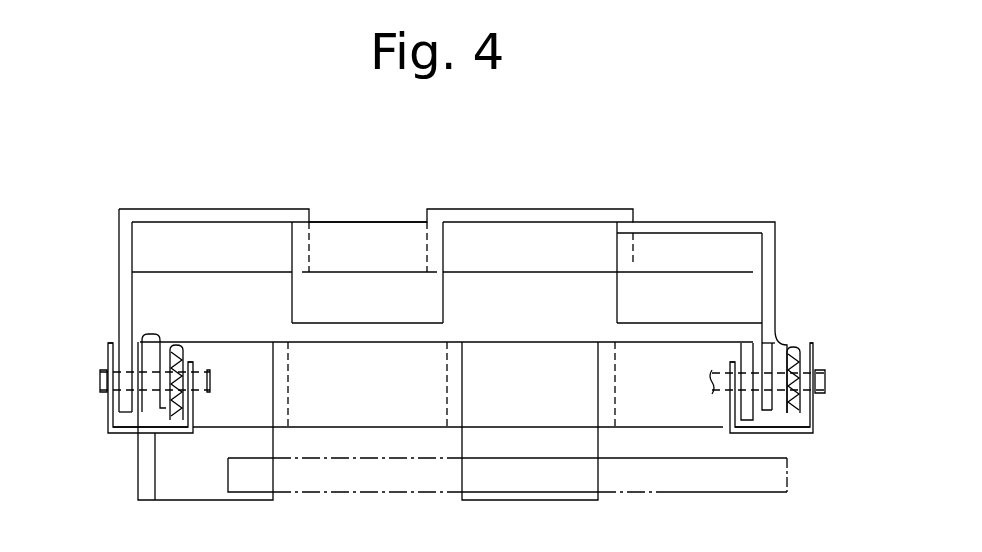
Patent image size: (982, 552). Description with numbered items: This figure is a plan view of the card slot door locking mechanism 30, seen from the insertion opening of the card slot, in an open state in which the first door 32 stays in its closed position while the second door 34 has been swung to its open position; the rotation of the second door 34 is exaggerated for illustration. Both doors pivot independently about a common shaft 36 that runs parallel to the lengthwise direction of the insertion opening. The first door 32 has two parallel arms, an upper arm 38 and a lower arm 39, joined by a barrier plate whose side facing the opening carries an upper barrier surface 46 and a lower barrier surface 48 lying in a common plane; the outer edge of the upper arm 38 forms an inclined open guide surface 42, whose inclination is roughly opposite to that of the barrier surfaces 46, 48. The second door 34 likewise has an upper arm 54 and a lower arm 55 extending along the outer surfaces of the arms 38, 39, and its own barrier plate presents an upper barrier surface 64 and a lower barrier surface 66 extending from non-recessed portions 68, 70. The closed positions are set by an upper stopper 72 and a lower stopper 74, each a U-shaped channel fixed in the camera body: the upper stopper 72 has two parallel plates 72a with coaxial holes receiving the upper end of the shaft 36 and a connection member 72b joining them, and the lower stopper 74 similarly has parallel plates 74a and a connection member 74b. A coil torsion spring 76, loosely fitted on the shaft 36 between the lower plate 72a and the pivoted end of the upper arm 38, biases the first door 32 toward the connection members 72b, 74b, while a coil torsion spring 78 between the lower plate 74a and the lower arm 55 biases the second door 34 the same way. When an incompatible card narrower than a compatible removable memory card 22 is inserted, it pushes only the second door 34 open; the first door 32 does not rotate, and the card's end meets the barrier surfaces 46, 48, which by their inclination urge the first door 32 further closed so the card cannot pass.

The card slot door locking mechanism 30 is at (121, 137).
The removable memory card 22 is at (393, 503).
The first door 32 is at (152, 500).
The second door 34 is at (555, 208).
The shaft 36 is at (98, 381).
The upper arm 38 is at (148, 347).
The lower arm 39 is at (748, 422).
The open guide surface 42 is at (137, 485).
The upper barrier surface 46 is at (214, 490).
The lower barrier surface 48 is at (520, 483).
The upper arm 54 is at (125, 257).
The lower arm 55 is at (778, 263).
The upper barrier surface 64 is at (443, 308).
The lower barrier surface 66 is at (618, 308).
The non-recessed portion 68 is at (344, 222).
The non-recessed portion 70 is at (684, 221).
The upper stopper 72 is at (107, 410).
The parallel plates 72a is at (110, 343).
The connection member 72b is at (132, 432).
The lower stopper 74 is at (815, 418).
The parallel plates 74a is at (807, 347).
The connection member 74b is at (790, 432).
The coil torsion spring 76 is at (185, 350).
The coil torsion spring 78 is at (796, 350).